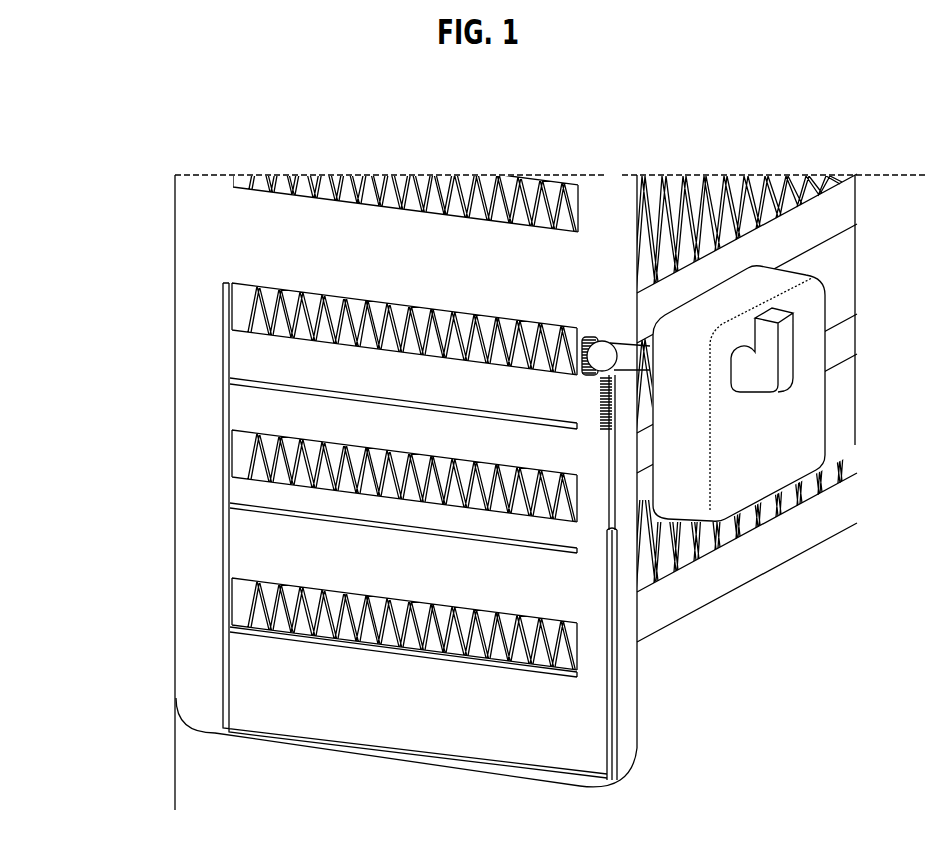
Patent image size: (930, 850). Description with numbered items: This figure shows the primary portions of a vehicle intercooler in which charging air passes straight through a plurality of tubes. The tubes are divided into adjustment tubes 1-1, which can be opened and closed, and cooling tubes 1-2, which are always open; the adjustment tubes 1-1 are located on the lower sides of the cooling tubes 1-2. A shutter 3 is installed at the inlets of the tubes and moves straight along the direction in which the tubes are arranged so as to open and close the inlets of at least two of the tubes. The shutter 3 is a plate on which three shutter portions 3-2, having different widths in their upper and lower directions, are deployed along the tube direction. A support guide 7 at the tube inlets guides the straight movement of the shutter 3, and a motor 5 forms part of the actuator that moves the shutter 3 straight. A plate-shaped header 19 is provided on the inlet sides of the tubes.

The adjustment tubes 1-1 is at (265, 317).
The cooling tubes 1-2 is at (568, 190).
The shutter 3 is at (570, 598).
The shutter portions 3-2 is at (265, 407).
The motor 5 is at (767, 453).
The support guide 7 is at (613, 738).
The plate-shaped header 19 is at (233, 235).